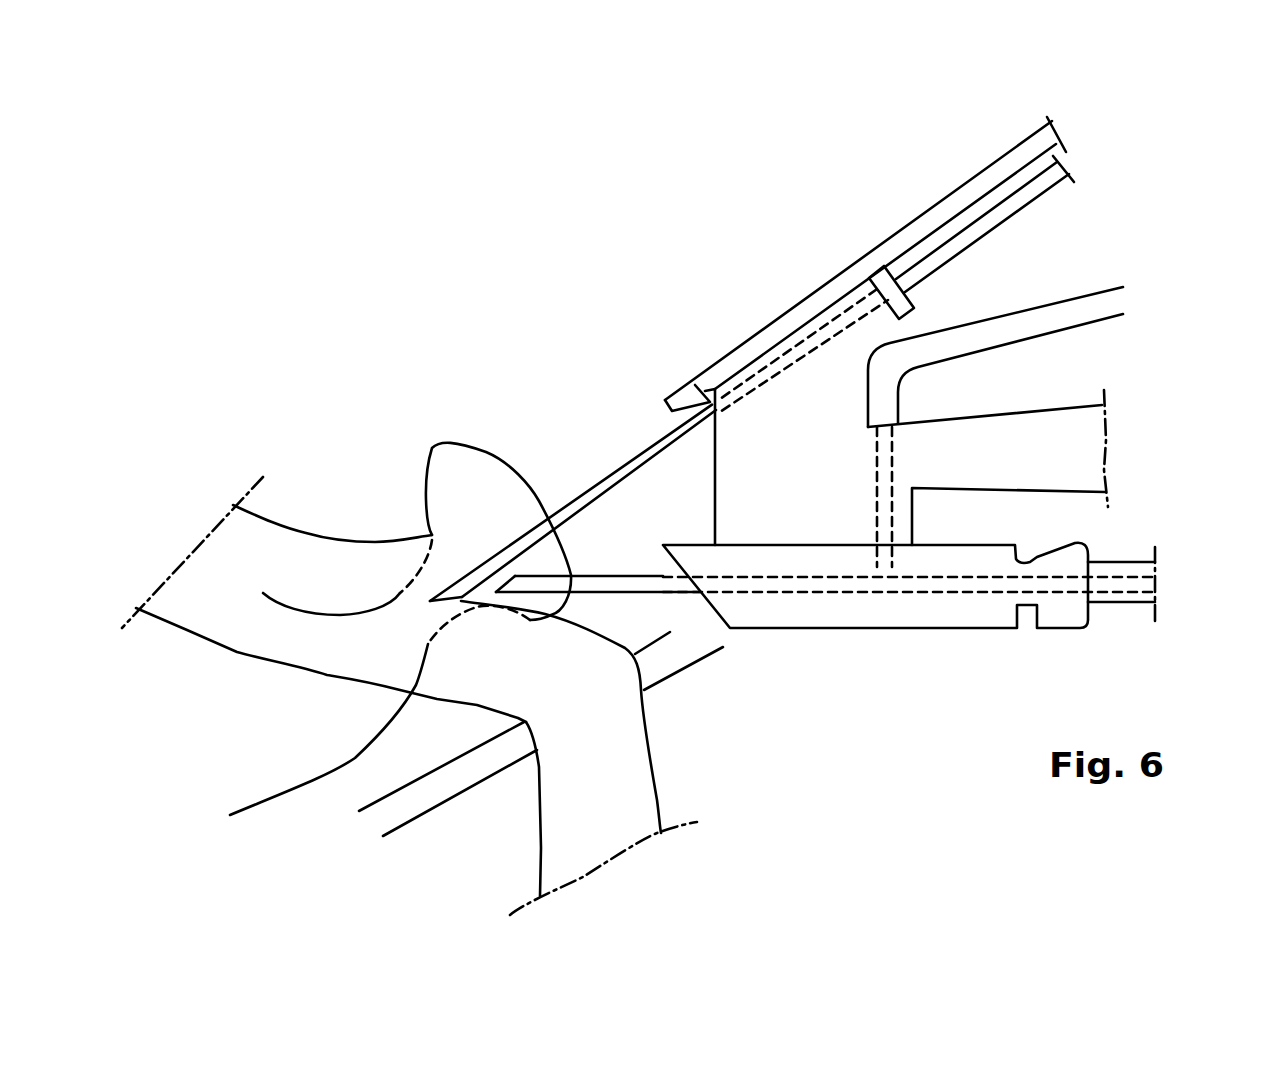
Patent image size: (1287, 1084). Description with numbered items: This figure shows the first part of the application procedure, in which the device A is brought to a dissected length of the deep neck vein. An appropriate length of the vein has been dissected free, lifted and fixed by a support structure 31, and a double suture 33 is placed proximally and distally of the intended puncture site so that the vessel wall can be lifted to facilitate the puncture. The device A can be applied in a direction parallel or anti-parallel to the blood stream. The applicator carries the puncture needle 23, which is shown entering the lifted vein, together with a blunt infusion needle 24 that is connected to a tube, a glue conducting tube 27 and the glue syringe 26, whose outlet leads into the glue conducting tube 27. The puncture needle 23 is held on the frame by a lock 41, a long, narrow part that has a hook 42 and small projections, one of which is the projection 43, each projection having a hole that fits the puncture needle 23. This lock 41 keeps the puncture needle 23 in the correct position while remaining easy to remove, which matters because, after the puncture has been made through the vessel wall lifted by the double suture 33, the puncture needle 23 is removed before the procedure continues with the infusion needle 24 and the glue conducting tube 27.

The puncture needle 23 is at (586, 502).
The blunt infusion needle 24 is at (603, 582).
The glue syringe 26 is at (1025, 322).
The glue conducting tube 27 is at (886, 493).
The support structure 31 is at (436, 809).
The double suture 33 is at (472, 446).
The lock 41 is at (992, 173).
The hook 42 is at (690, 393).
The small projection 43 is at (885, 288).
The device A is at (1100, 540).